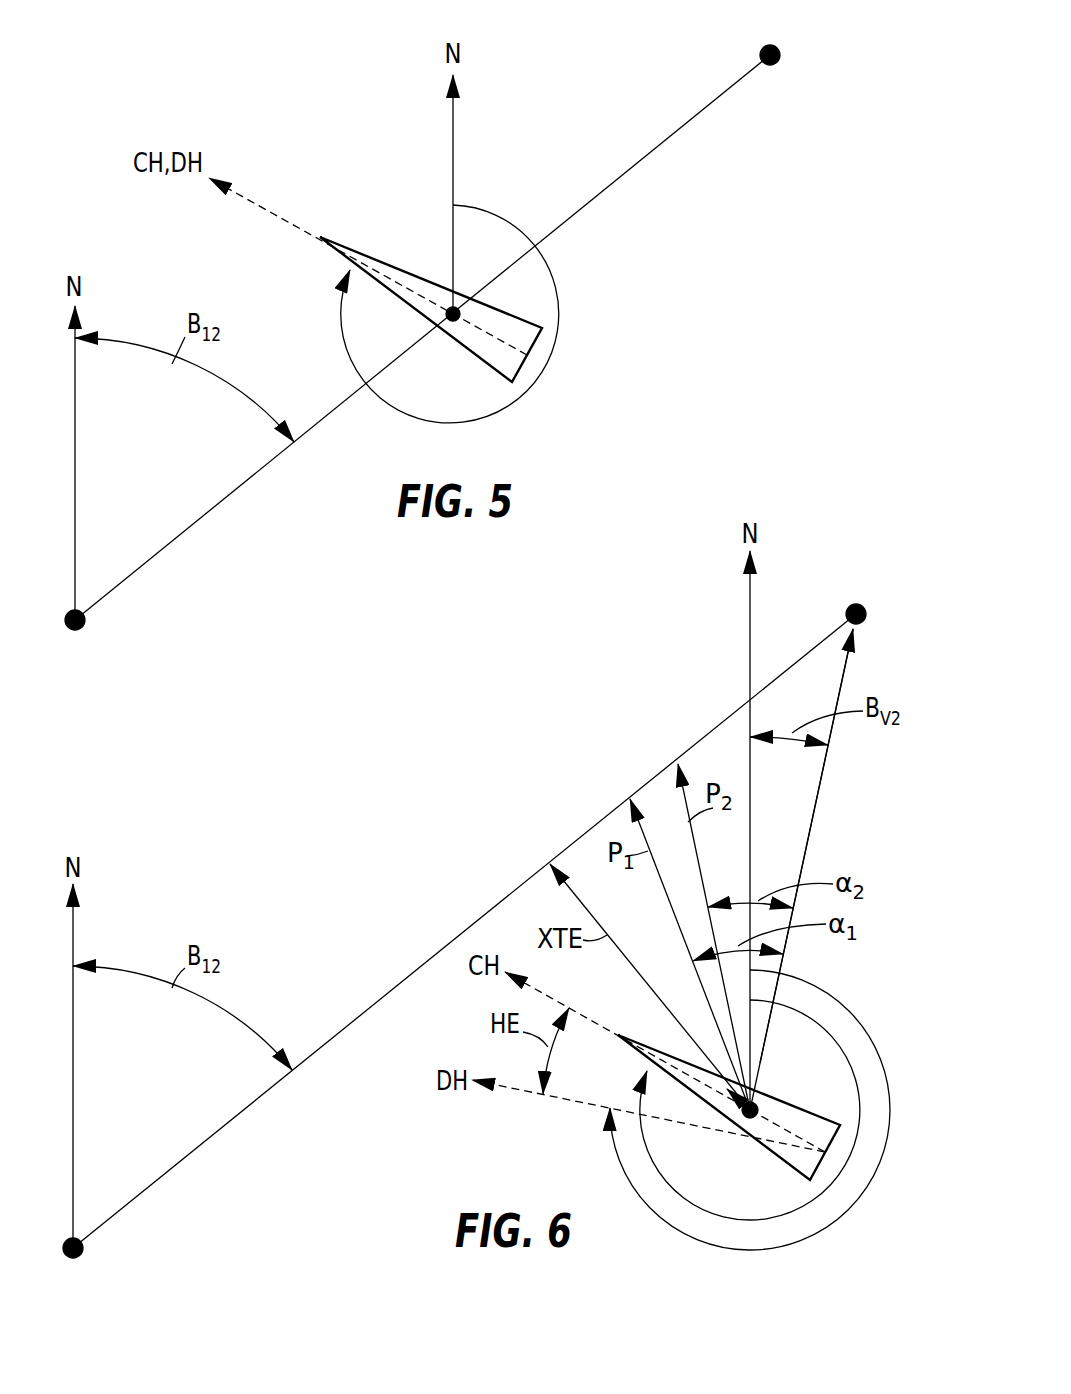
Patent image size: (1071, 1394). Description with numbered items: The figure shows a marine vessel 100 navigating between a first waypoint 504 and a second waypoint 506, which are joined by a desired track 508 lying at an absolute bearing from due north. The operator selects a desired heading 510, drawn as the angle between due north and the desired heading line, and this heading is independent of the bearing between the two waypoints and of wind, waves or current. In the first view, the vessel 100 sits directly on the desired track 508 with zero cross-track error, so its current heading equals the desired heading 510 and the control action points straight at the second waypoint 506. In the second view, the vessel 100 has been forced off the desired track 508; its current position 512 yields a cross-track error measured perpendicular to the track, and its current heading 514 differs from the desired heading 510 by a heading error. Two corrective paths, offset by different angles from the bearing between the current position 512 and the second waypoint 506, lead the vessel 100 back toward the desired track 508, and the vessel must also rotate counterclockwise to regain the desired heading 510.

In FIG. 5, the marine vessel 100 is at (395, 262).
In FIG. 6, the marine vessel 100 is at (807, 1107).
In FIG. 5, the first waypoint 504 is at (63, 615).
In FIG. 6, the first waypoint 504 is at (61, 1246).
In FIG. 5, the second waypoint 506 is at (782, 57).
In FIG. 6, the second waypoint 506 is at (869, 616).
In FIG. 5, the desired track 508 is at (643, 162).
In FIG. 6, the desired track 508 is at (383, 995).
In FIG. 5, the desired heading 510 is at (563, 293).
In FIG. 6, the desired heading 510 is at (877, 1170).
In FIG. 6, the current position 512 is at (737, 1128).
In FIG. 5, the current heading 514 is at (515, 314).
In FIG. 6, the current heading 514 is at (845, 1053).